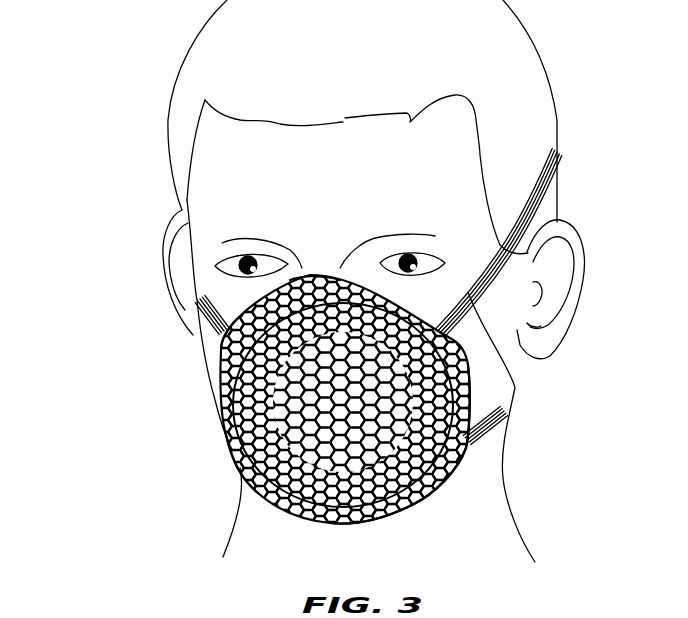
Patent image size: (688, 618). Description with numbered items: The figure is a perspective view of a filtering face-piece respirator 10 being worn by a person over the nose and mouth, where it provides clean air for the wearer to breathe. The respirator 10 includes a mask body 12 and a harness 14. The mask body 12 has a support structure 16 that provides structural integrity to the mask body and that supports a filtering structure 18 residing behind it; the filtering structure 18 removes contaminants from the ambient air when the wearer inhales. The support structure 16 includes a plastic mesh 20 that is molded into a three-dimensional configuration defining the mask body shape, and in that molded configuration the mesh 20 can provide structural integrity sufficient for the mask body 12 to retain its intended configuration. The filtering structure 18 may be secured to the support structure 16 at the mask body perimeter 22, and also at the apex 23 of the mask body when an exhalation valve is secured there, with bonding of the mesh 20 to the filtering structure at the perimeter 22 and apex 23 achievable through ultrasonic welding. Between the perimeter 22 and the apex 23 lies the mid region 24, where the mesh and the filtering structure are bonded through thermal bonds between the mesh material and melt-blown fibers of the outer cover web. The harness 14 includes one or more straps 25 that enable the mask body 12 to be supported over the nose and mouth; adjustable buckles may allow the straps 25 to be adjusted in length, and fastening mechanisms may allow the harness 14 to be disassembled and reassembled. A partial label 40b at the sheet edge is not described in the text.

The filtering face-piece respirator 10 is at (124, 406).
The mask body 12 is at (229, 440).
The harness 14 is at (557, 166).
The support structure 16 is at (253, 485).
The filtering structure 18 is at (318, 468).
The plastic mesh 20 is at (328, 277).
The mask body perimeter 22 is at (262, 316).
The apex 23 is at (375, 482).
The mid region 24 is at (441, 488).
The straps 25 is at (208, 330).
The partial numeral from adjacent figure 40b is at (68, 613).